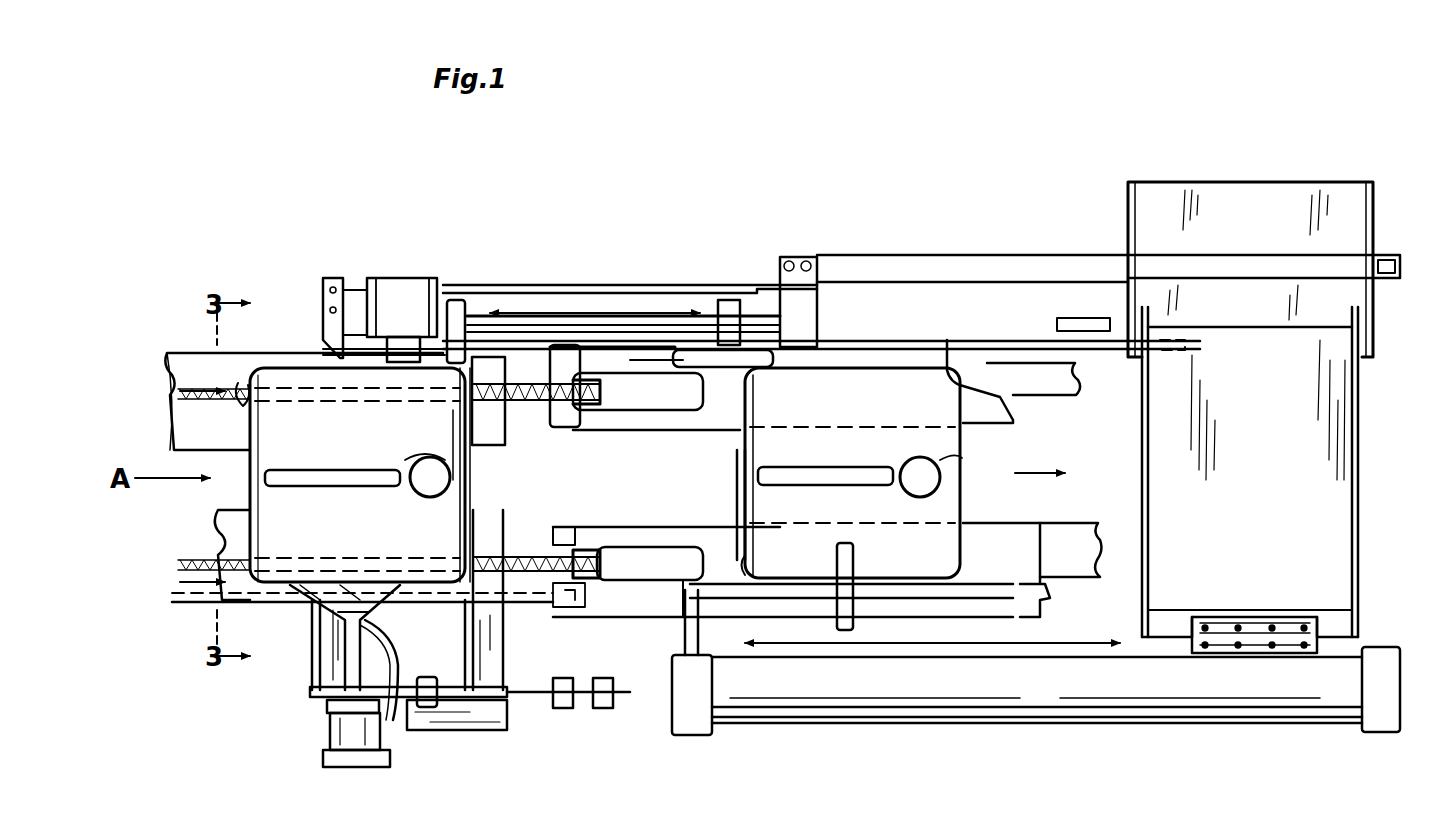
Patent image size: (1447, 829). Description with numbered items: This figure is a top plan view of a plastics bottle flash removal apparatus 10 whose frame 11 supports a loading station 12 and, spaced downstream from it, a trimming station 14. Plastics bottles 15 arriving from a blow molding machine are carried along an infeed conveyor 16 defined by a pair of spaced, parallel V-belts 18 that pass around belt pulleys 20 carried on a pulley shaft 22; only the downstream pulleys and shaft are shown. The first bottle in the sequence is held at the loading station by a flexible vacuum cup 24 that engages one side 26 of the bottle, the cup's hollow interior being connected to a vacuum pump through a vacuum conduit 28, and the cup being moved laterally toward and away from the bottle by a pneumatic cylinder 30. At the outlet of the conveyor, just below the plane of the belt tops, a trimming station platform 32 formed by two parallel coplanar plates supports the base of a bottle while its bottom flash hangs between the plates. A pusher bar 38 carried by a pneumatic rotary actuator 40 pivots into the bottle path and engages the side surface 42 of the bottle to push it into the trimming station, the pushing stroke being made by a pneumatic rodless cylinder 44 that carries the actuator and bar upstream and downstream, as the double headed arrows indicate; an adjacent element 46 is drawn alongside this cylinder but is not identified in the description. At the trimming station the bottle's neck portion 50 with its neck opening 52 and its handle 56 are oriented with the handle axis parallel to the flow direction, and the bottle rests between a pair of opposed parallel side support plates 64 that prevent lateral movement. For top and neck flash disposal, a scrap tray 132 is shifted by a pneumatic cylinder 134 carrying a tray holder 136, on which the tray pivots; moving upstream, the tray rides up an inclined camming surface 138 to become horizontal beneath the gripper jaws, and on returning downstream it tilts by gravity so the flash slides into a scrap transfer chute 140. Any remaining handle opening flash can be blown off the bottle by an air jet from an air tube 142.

The plastics bottle flash removal apparatus 10 is at (758, 153).
The frame 11 is at (215, 530).
The loading station 12 is at (398, 232).
The trimming station 14 is at (730, 230).
The plastics bottle 15 is at (258, 430).
The infeed conveyor 16 is at (130, 650).
The V-belts 18 is at (178, 395).
The belt pulleys 20 is at (527, 403).
The pulley shaft 22 is at (580, 420).
The flexible vacuum cup 24 is at (382, 608).
The side of bottle 26 is at (298, 597).
The vacuum conduit 28 is at (402, 662).
The pneumatic cylinder 30 is at (340, 731).
The trimming station platform 32 is at (677, 420).
The pusher bar 38 is at (488, 465).
The pneumatic rotary actuator 40 is at (410, 282).
The side surface of bottle 42 is at (243, 385).
The pneumatic rodless cylinder 44 is at (505, 283).
The drive shaft 46 is at (586, 314).
The neck portion 50 is at (437, 455).
The neck opening 52 is at (405, 457).
The handle 56 is at (345, 489).
The side support plates 64 is at (950, 340).
The scrap tray 132 is at (1345, 460).
The pneumatic cylinder 134 is at (1158, 722).
The tray holder 136 is at (1332, 628).
The inclined camming surface 138 is at (1025, 340).
The scrap transfer chute 140 is at (1358, 207).
The air tube 142 is at (855, 565).